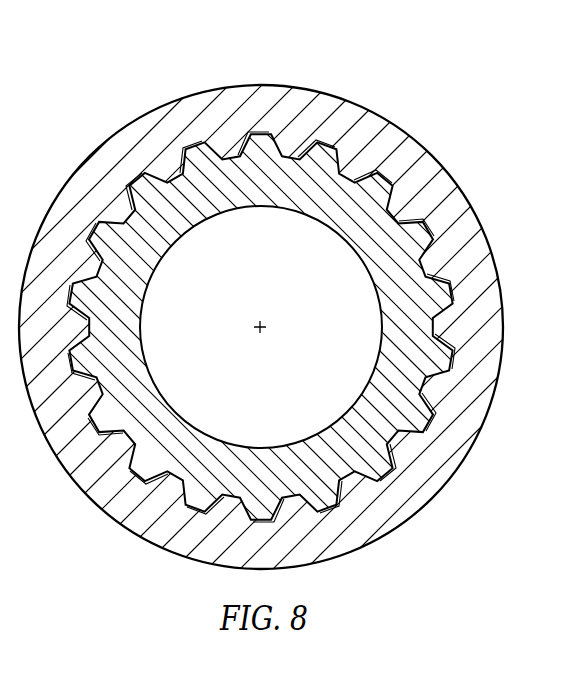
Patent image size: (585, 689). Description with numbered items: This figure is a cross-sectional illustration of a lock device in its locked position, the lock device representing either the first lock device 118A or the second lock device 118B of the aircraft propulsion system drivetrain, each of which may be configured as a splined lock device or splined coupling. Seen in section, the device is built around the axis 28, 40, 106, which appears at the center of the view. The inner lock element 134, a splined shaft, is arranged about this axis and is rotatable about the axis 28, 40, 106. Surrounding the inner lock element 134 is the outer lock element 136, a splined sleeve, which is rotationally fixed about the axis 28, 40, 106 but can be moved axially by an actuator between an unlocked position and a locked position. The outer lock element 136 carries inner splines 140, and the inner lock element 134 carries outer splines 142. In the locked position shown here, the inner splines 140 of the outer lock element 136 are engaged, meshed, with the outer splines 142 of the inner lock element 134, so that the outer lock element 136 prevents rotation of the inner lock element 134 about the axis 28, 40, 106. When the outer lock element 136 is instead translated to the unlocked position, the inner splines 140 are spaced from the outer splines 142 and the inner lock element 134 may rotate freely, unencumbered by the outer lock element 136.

The first lock device 118A is at (432, 96).
The second lock device 118B is at (293, 327).
The outer lock element 136 is at (478, 210).
The inner splines 140 is at (261, 327).
The outer splines 142 is at (318, 235).
The inner lock element 134 is at (361, 273).
The axis 28 is at (272, 366).
The axis 40 is at (272, 366).
The axis 106 is at (262, 332).